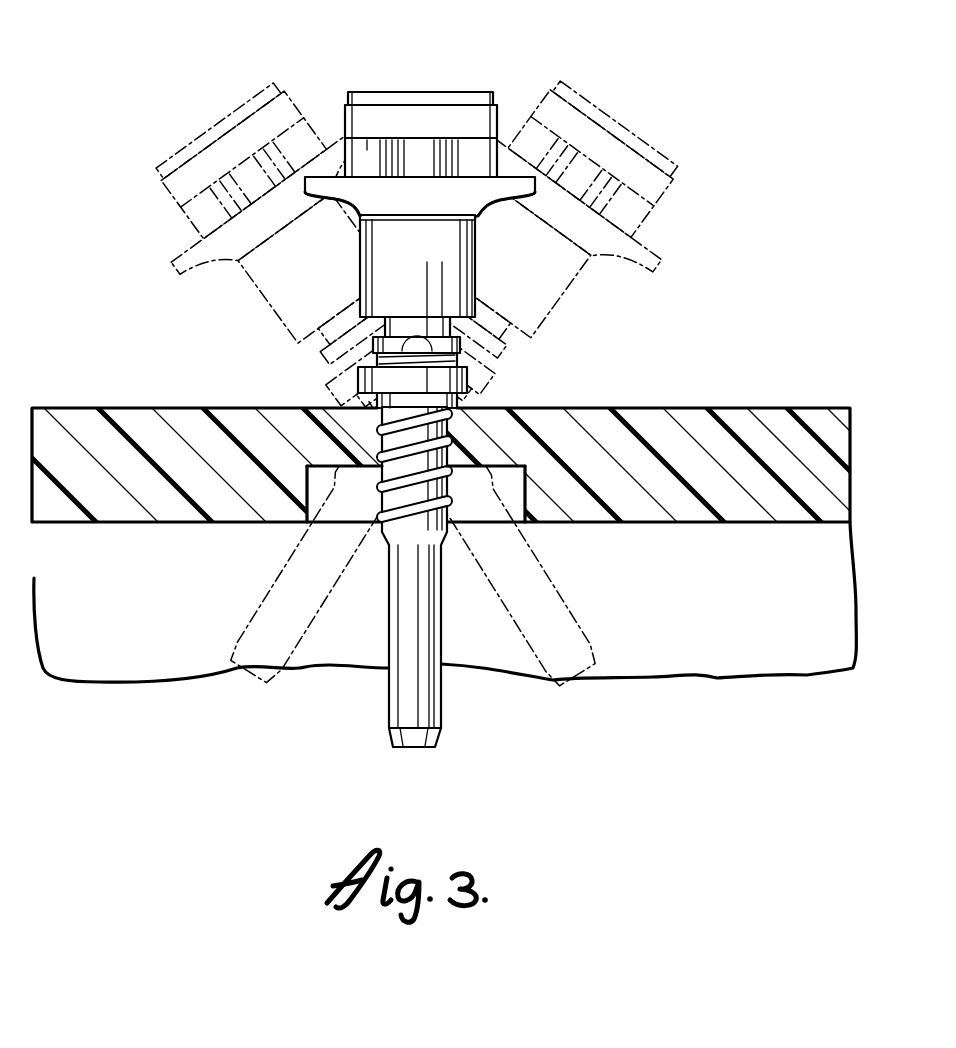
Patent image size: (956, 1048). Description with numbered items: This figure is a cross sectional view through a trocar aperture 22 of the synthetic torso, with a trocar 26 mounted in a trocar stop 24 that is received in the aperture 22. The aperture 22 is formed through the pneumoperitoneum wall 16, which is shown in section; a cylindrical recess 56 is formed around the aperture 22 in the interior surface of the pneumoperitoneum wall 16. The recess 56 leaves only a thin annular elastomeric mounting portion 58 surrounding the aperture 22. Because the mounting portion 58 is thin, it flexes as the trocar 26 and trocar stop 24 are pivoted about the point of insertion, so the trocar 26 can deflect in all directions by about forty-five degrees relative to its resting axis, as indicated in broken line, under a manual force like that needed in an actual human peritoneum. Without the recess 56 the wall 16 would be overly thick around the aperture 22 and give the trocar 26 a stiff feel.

The pneumoperitoneum wall 16 is at (773, 407).
The trocar aperture 22 is at (449, 428).
The trocar stop 24 is at (478, 376).
The trocar 26 is at (447, 197).
The cylindrical recess 56 is at (512, 466).
The annular elastomeric mounting portion 58 is at (308, 452).